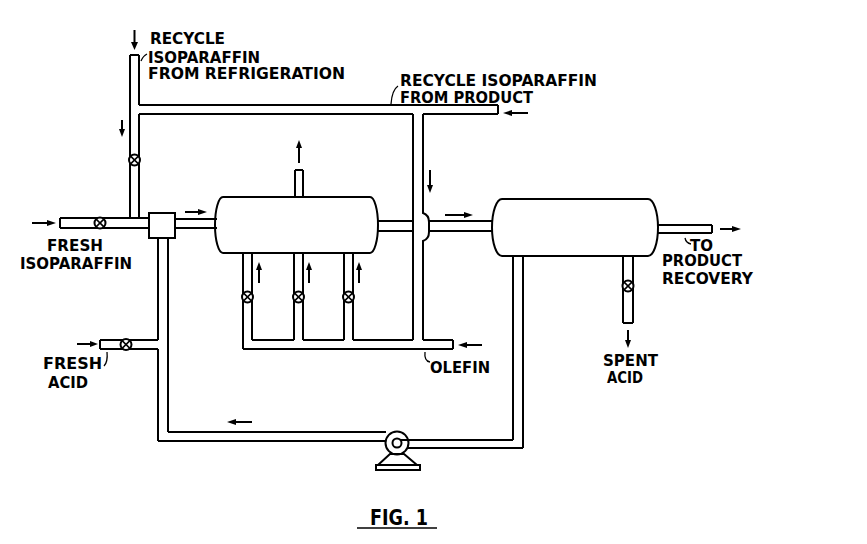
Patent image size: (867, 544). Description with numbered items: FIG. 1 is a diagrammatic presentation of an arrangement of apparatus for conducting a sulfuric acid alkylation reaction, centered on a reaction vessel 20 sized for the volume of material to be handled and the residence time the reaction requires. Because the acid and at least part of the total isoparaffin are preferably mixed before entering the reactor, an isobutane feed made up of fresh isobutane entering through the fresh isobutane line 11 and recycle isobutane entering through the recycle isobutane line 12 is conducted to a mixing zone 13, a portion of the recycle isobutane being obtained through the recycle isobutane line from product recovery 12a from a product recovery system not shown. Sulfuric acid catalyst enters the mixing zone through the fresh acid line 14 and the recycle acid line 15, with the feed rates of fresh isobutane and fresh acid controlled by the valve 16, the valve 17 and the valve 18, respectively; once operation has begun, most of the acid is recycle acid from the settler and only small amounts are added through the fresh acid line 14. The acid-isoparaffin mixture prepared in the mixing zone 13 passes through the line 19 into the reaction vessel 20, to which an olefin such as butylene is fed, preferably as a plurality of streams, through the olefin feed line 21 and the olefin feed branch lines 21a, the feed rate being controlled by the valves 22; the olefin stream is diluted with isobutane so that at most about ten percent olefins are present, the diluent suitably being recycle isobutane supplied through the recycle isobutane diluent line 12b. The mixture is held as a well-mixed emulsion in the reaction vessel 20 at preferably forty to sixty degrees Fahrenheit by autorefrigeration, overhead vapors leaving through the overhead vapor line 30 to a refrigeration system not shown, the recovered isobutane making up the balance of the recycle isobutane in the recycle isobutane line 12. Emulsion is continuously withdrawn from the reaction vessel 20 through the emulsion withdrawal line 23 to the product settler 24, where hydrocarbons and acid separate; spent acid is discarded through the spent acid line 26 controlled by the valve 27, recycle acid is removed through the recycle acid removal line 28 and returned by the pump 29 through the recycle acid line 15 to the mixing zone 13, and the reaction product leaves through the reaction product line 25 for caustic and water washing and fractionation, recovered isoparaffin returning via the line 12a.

The fresh isobutane line 11 is at (82, 217).
The recycle isobutane line 12 is at (140, 138).
The recycle isobutane line from product recovery 12a is at (272, 104).
The recycle isobutane diluent line 12b is at (424, 282).
The mixing zone 13 is at (162, 225).
The fresh acid line 14 is at (146, 350).
The recycle acid line 15 is at (293, 416).
The valve 16 is at (103, 217).
The valve 17 is at (128, 160).
The valve 18 is at (123, 339).
The line 19 is at (199, 229).
The reaction vessel 20 is at (296, 225).
The olefin feed line 21 is at (385, 351).
The olefin feed branch lines 21a is at (243, 326).
The valves 22 is at (242, 295).
The emulsion withdrawal line 23 is at (447, 232).
The product settler 24 is at (575, 227).
The reaction product line 25 is at (683, 224).
The spent acid line 26 is at (623, 317).
The valve 27 is at (622, 288).
The recycle acid removal line 28 is at (524, 390).
The pump 29 is at (378, 466).
The overhead vapor line 30 is at (294, 178).